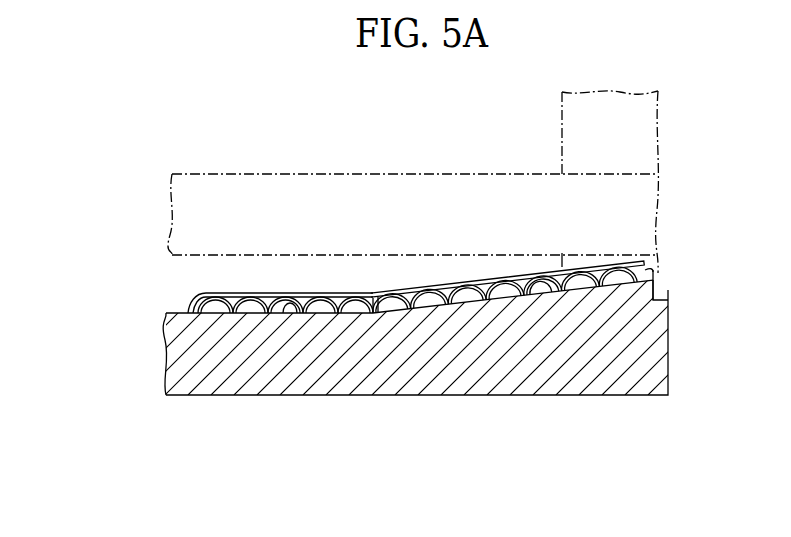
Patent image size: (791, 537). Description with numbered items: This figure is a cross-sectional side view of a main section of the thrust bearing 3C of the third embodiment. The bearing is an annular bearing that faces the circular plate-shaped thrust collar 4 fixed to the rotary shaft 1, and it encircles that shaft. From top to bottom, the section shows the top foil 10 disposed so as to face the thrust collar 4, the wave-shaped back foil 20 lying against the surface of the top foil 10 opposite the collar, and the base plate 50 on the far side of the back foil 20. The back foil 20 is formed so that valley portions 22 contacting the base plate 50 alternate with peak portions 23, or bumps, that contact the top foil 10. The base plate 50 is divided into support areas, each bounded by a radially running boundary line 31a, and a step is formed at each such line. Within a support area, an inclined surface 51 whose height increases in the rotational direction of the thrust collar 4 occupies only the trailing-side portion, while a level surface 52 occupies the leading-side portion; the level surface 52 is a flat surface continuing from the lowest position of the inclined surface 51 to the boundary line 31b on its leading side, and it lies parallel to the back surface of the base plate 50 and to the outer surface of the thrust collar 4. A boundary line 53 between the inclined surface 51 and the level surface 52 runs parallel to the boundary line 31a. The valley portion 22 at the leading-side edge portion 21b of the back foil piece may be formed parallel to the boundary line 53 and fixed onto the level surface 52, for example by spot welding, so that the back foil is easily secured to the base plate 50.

The rotary shaft 1 is at (562, 95).
The thrust collar 4 is at (547, 187).
The top foil 10 is at (228, 294).
The thrust bearing 3C is at (172, 294).
The back foil 20 is at (375, 295).
The edge portion 21b is at (195, 313).
The valley portion 22 is at (488, 292).
The peak portion 23 is at (538, 270).
The boundary line 31a is at (658, 264).
The boundary line 31b is at (657, 290).
The base plate 50 is at (243, 382).
The inclined surface 51 is at (538, 290).
The level surface 52 is at (290, 304).
The boundary line 53 is at (375, 306).